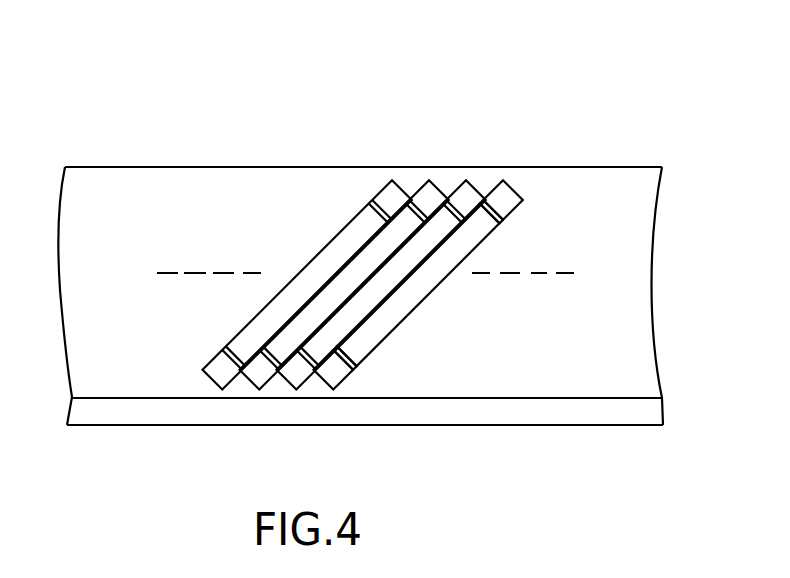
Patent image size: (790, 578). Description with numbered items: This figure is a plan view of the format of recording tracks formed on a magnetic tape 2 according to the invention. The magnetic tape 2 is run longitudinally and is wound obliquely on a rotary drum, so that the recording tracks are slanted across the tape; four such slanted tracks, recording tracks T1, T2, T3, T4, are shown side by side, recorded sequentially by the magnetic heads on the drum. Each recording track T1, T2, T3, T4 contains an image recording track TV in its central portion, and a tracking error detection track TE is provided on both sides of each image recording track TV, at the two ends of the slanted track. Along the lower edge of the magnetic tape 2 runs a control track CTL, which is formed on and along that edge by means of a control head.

The magnetic tape 2 is at (102, 166).
The control track CTL is at (142, 413).
The recording track T1 is at (410, 182).
The recording track T2 is at (445, 182).
The recording track T3 is at (477, 181).
The recording track T4 is at (451, 295).
The tracking error detection track TE is at (505, 205).
The image recording track TV is at (425, 288).